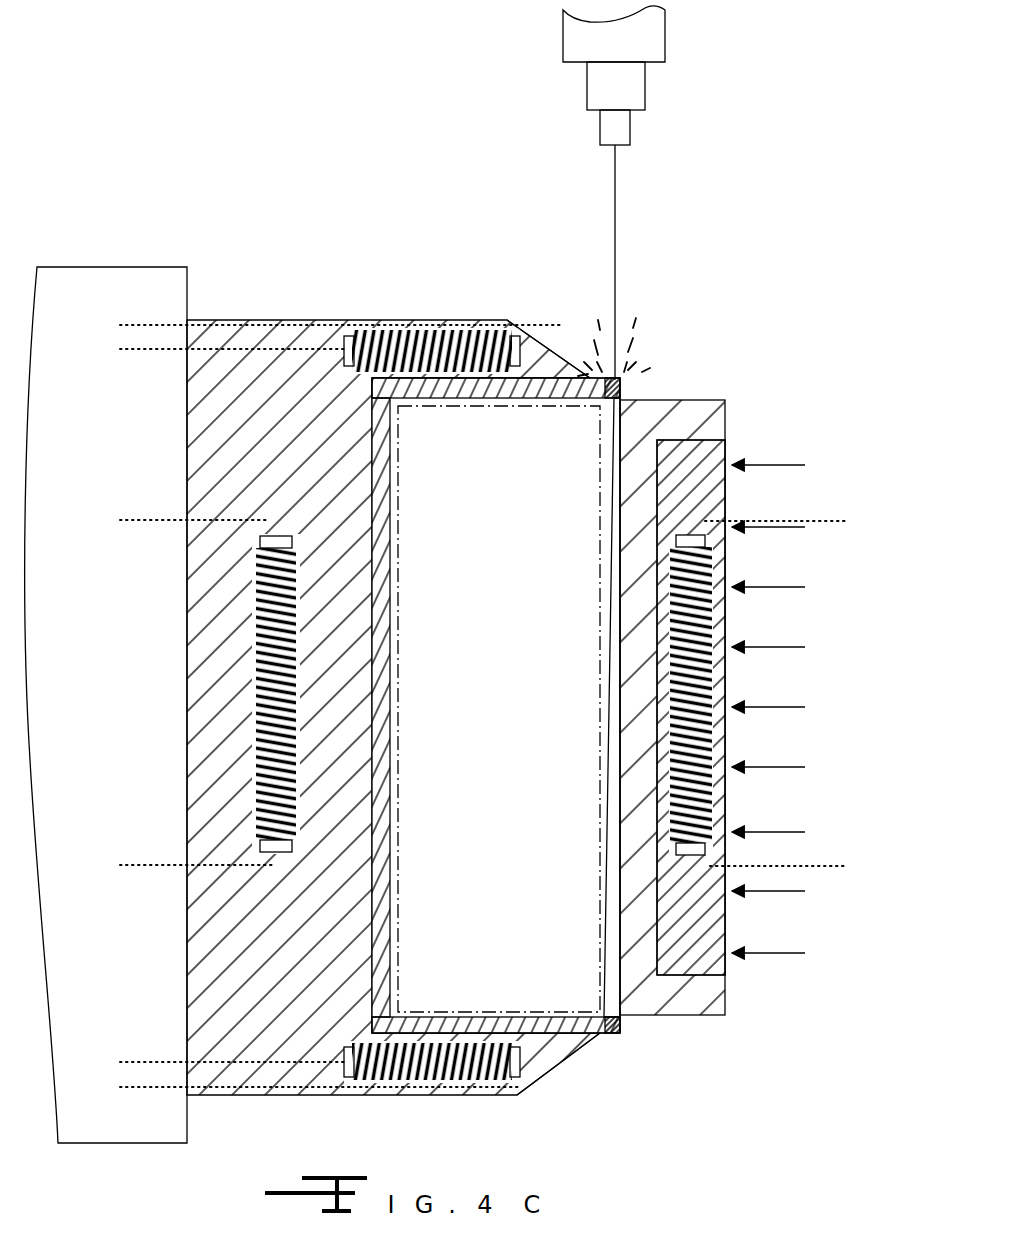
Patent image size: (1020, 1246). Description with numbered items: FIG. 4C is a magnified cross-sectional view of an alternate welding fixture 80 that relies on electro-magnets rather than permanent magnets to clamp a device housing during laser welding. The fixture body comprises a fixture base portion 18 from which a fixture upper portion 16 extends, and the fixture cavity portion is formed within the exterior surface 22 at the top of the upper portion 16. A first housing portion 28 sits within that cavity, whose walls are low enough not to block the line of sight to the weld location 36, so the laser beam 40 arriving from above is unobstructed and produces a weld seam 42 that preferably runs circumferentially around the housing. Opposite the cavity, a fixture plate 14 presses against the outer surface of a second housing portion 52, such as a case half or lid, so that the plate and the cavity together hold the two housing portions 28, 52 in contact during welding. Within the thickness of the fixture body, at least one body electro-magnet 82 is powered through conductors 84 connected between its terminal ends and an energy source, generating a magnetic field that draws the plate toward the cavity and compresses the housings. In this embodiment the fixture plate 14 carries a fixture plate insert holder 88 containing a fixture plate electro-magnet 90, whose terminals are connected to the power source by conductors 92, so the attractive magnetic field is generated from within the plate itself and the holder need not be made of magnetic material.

The welding fixture 80 is at (250, 198).
The fixture base portion 18 is at (128, 283).
The conductors 84 is at (257, 320).
The body electro-magnet 82 is at (425, 330).
The first housing portion 28 is at (550, 377).
The laser beam 40 is at (622, 263).
The weld location 36 is at (625, 392).
The fixture plate 14 is at (690, 383).
The fixture plate insert holder 88 is at (723, 417).
The fixture plate electro-magnet 90 is at (710, 628).
The conductors 92 is at (795, 866).
The second housing portion 52 is at (613, 988).
The weld seam 42 is at (625, 1032).
The exterior surface 22 is at (585, 1038).
The fixture upper portion 16 is at (257, 1050).